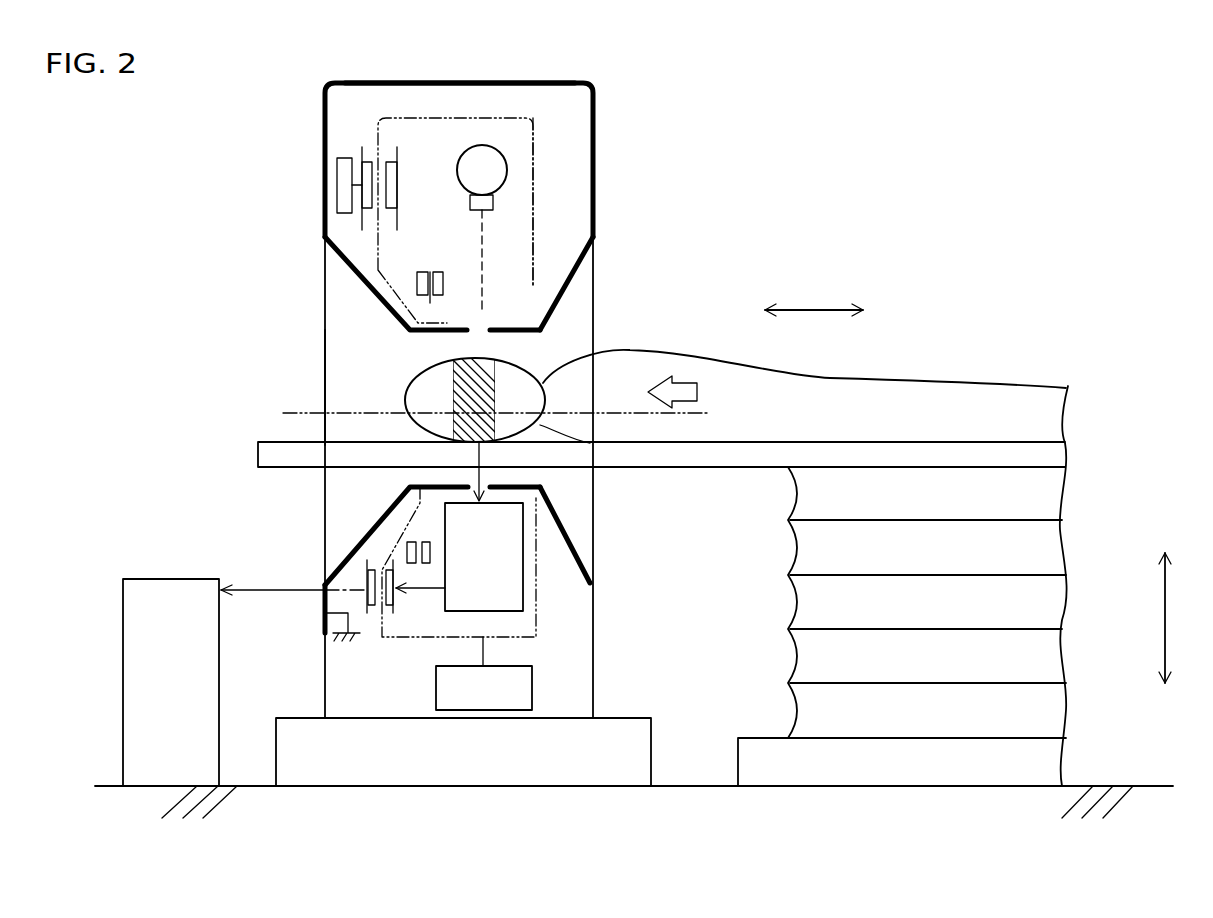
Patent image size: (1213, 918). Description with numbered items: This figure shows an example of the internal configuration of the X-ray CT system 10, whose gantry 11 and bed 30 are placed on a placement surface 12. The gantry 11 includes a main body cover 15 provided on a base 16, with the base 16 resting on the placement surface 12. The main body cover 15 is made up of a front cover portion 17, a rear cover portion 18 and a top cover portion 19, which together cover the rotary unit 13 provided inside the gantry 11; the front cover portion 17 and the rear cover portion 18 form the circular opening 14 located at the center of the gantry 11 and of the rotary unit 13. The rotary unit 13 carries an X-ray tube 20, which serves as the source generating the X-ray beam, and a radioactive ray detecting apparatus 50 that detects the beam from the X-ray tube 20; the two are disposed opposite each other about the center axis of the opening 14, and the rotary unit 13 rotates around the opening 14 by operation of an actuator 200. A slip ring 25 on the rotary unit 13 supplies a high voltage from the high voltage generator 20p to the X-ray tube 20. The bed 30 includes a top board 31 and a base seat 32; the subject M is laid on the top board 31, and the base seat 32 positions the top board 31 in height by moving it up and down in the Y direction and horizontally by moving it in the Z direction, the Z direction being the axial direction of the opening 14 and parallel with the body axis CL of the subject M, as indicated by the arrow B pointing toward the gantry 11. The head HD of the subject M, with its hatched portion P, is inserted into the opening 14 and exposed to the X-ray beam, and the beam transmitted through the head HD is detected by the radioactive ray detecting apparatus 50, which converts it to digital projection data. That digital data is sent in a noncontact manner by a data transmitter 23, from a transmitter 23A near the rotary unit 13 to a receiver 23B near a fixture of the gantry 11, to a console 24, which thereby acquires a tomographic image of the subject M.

The X-ray CT system 10 is at (877, 125).
The gantry 11 is at (300, 157).
The placement surface 12 is at (1146, 785).
The rotary unit 13 is at (537, 168).
The opening 14 is at (348, 343).
The main body cover 15 is at (506, 326).
The base 16 is at (610, 775).
The front cover portion 17 is at (574, 273).
The rear cover portion 18 is at (379, 302).
The top cover portion 19 is at (556, 80).
The X-ray tube 20 is at (482, 145).
The high voltage generator 20p is at (342, 200).
The data transmitter 23 is at (371, 711).
The transmitter 23A is at (393, 608).
The receiver 23B is at (367, 608).
The console 24 is at (178, 579).
The slip ring 25 is at (367, 133).
The bed 30 is at (1005, 302).
The top board 31 is at (1058, 453).
The base seat 32 is at (1058, 599).
The radioactive ray detecting apparatus 50 is at (527, 566).
The actuator 200 is at (473, 704).
The head HD is at (405, 400).
The nozzle plate P is at (462, 378).
The body axis CL is at (609, 413).
The subject M is at (906, 375).
The transport direction B is at (698, 392).
The Z direction Z is at (818, 310).
The Y direction Y is at (1165, 618).